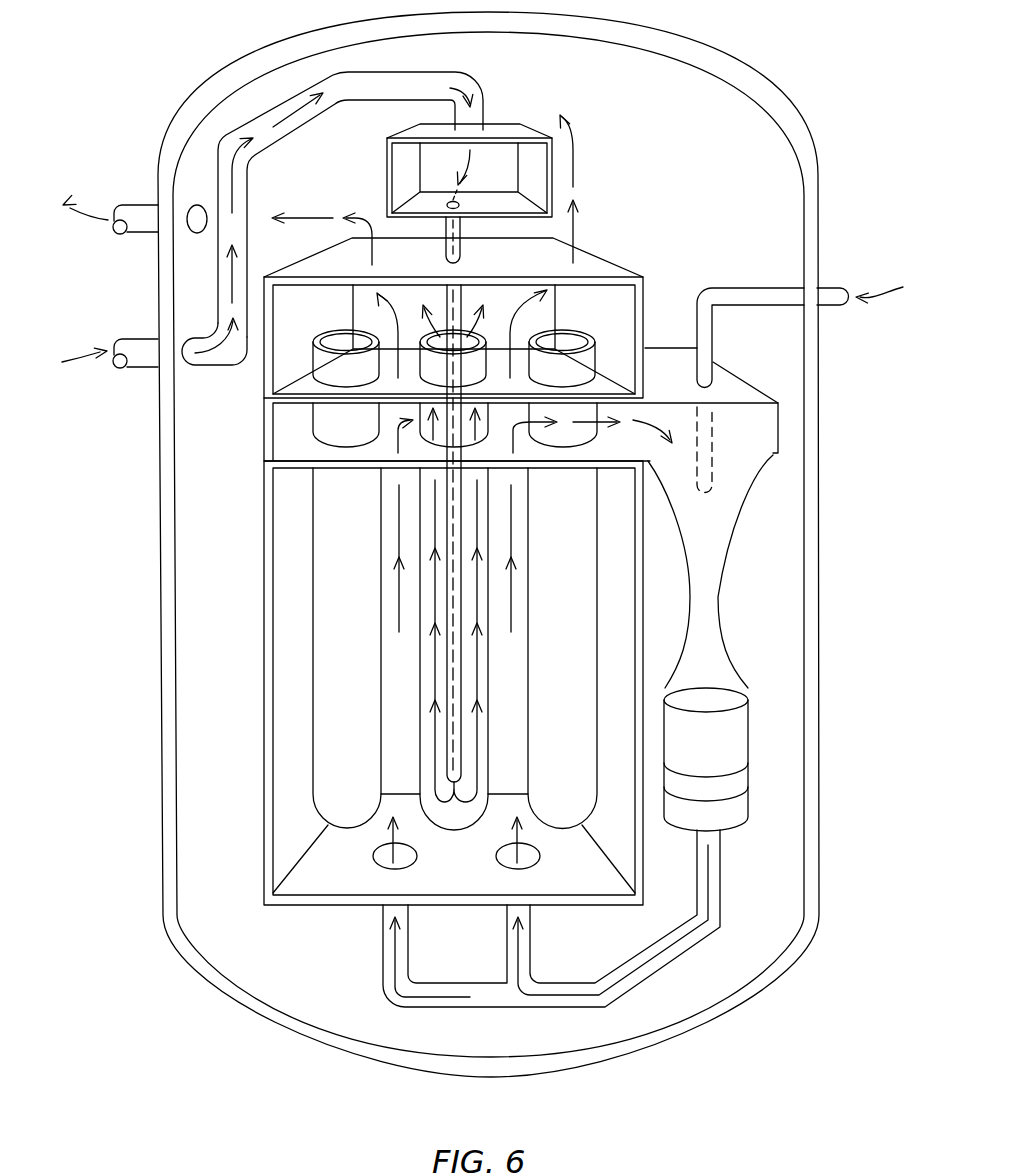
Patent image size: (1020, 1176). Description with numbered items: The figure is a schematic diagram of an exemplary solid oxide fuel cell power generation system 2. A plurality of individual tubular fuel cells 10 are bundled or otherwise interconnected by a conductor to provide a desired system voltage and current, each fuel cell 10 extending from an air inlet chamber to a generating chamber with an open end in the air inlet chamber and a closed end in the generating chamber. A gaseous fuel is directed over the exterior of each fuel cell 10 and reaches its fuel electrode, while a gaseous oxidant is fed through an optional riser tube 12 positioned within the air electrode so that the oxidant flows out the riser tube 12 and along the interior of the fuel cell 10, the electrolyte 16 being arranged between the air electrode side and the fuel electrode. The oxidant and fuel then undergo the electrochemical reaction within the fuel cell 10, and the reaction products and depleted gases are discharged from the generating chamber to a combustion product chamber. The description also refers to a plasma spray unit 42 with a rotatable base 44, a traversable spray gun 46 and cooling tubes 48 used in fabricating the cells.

The solid oxide fuel cell power generation system 2 is at (718, 35).
The fuel cell 10 is at (488, 595).
The riser tube 12 is at (453, 745).
The electrolyte 16 is at (420, 683).
The plasma spray unit 42 is at (820, 878).
The rotatable base 44 is at (510, 726).
The spray gun 46 is at (623, 443).
The cooling tubes 48 is at (617, 330).